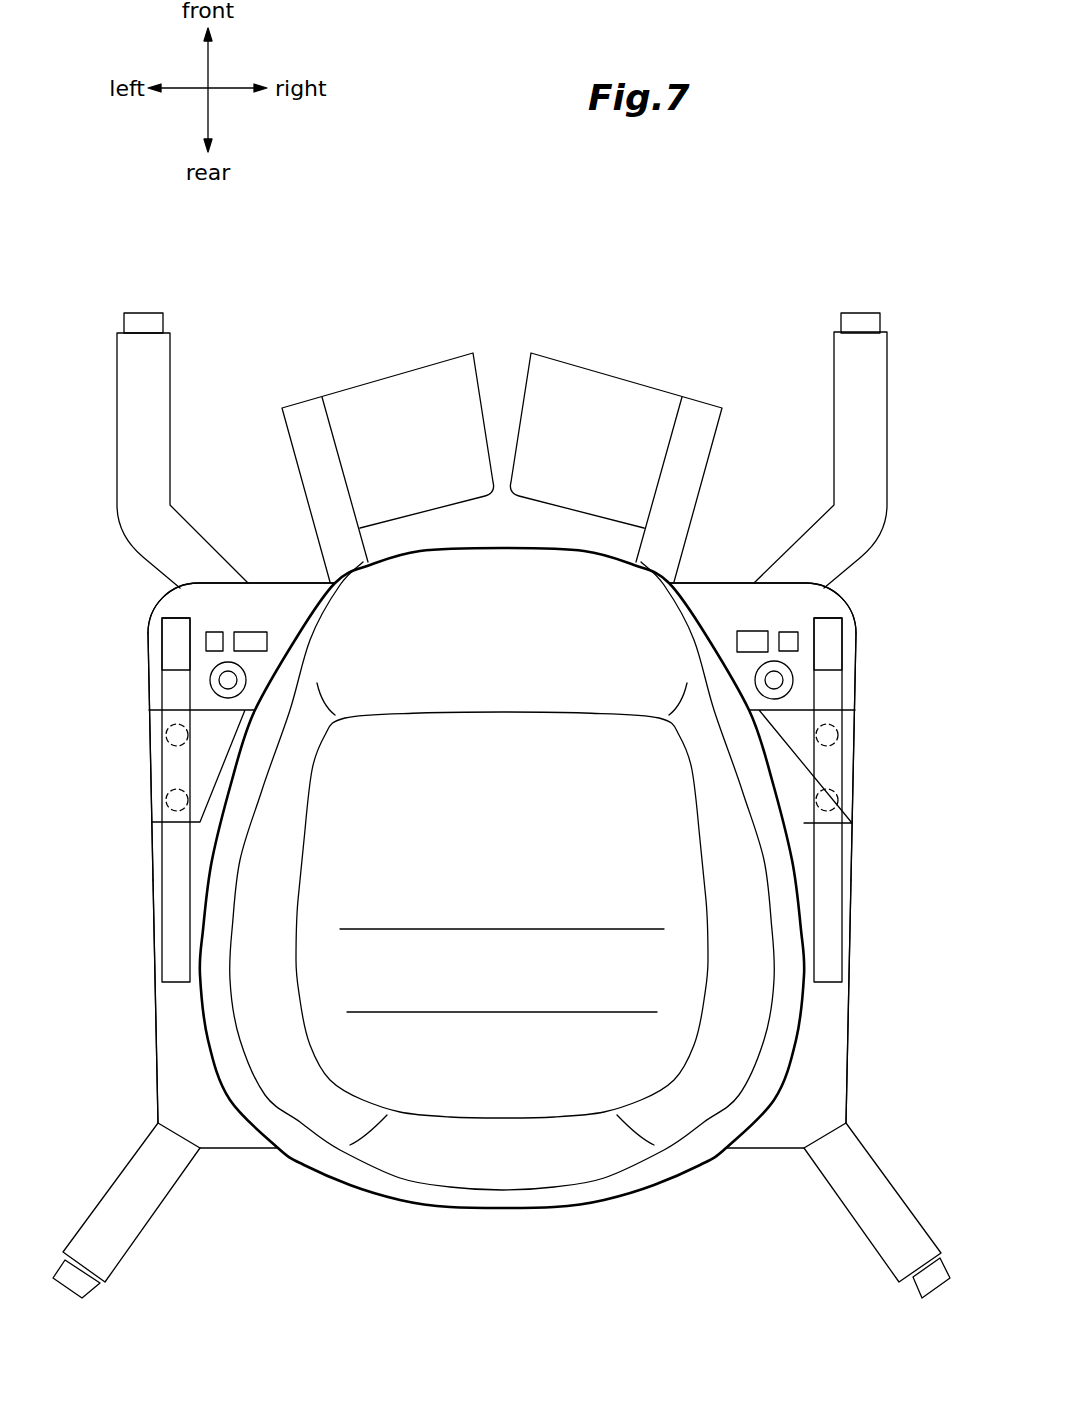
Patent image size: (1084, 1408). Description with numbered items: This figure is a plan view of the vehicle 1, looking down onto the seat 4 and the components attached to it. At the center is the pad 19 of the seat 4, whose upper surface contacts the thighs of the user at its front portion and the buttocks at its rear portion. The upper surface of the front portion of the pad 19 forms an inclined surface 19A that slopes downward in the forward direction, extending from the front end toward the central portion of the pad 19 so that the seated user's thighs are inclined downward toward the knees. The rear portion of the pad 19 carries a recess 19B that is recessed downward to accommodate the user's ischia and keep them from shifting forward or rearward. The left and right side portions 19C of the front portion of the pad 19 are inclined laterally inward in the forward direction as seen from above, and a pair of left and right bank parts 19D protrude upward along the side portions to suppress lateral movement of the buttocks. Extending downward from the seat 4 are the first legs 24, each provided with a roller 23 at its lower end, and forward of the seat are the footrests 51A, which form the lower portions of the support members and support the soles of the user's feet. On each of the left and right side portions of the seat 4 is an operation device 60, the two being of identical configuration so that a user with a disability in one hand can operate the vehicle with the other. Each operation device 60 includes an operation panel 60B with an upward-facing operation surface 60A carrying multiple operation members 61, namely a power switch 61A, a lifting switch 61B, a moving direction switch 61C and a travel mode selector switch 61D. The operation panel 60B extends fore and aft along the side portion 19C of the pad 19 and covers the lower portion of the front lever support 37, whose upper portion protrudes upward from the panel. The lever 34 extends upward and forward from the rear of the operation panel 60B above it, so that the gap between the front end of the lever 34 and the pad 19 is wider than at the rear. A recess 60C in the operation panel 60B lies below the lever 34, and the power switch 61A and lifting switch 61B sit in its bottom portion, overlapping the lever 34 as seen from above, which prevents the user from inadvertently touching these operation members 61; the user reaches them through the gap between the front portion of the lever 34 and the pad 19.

The vehicle 1 is at (573, 259).
The seat 4 is at (500, 793).
The pad 19 is at (500, 793).
The inclined surface 19A is at (467, 585).
The recess 19B is at (478, 1002).
The side portion 19C is at (212, 1015).
The bank part 19D is at (247, 930).
The roller 23 is at (148, 315).
The first leg 24 is at (116, 362).
The lever 34 is at (165, 857).
The front lever support 37 is at (168, 648).
The footrest 51A is at (387, 388).
The operation device 60 is at (507, 848).
The operation surface 60A is at (790, 592).
The operation panel 60B is at (848, 685).
The recess 60C is at (848, 765).
The operation member 61 is at (502, 702).
The power switch 61A is at (840, 728).
The lifting switch 61B is at (840, 793).
The moving direction switch 61C is at (768, 690).
The travel mode selector switch 61D is at (730, 640).